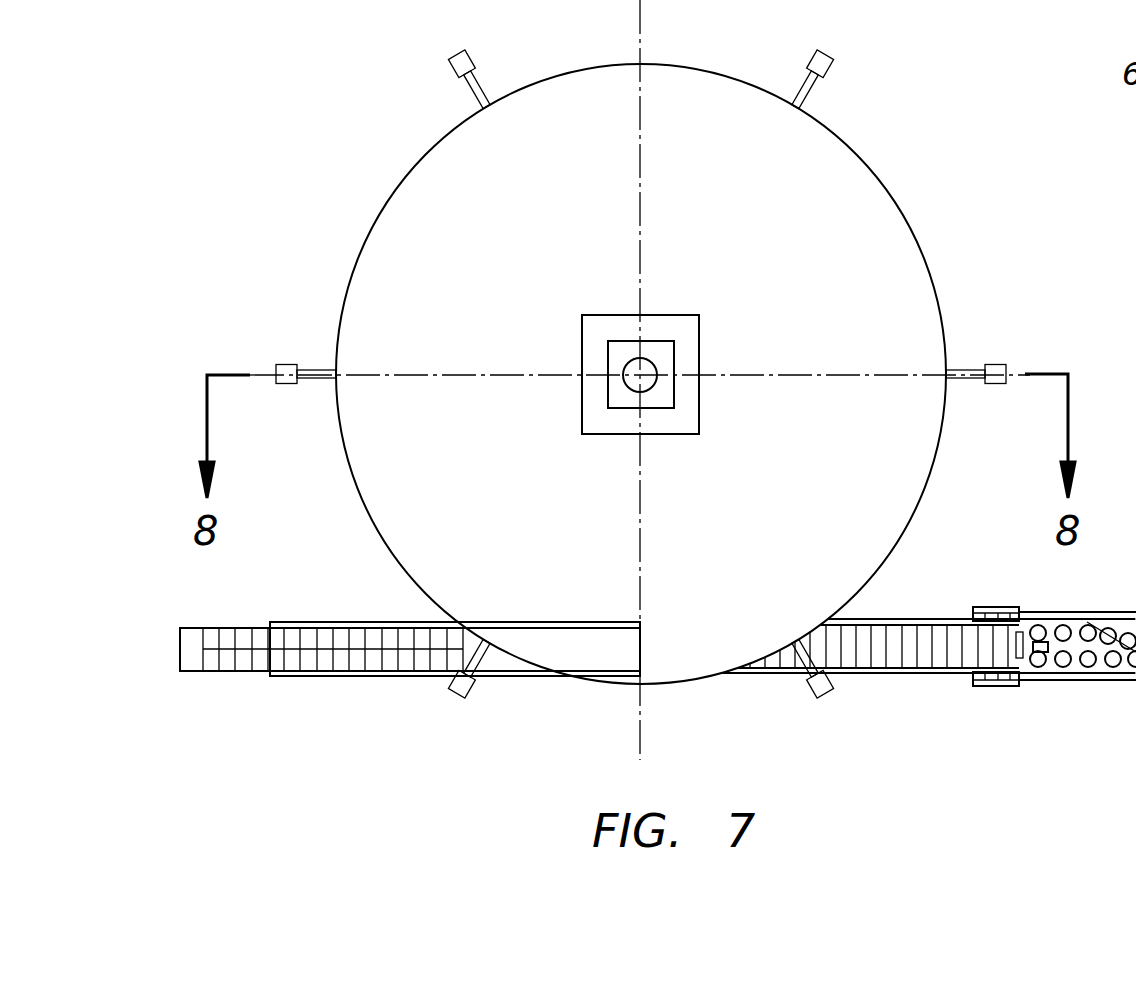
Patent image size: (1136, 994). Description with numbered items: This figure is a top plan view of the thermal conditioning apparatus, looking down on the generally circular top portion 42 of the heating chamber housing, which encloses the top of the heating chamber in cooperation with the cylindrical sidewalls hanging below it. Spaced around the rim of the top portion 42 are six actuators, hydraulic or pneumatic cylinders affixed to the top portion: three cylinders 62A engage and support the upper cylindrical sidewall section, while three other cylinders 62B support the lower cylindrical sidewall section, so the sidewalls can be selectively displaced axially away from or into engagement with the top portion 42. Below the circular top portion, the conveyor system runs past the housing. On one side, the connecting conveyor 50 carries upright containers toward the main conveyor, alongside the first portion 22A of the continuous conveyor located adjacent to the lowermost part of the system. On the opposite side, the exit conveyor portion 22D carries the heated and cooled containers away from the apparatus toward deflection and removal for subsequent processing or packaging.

The circular top portion 42 is at (863, 228).
The cylinders 62A is at (827, 62).
The cylinders 62B is at (456, 60).
The connecting conveyor 50 is at (237, 628).
The first portion 22A is at (386, 660).
The exit conveyor portion 22D is at (937, 640).